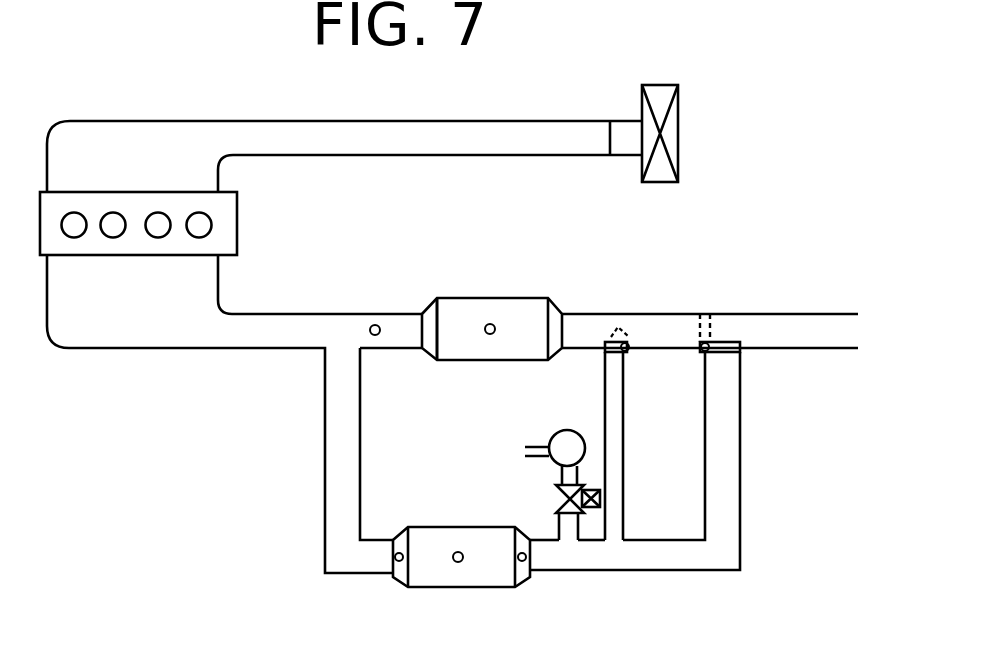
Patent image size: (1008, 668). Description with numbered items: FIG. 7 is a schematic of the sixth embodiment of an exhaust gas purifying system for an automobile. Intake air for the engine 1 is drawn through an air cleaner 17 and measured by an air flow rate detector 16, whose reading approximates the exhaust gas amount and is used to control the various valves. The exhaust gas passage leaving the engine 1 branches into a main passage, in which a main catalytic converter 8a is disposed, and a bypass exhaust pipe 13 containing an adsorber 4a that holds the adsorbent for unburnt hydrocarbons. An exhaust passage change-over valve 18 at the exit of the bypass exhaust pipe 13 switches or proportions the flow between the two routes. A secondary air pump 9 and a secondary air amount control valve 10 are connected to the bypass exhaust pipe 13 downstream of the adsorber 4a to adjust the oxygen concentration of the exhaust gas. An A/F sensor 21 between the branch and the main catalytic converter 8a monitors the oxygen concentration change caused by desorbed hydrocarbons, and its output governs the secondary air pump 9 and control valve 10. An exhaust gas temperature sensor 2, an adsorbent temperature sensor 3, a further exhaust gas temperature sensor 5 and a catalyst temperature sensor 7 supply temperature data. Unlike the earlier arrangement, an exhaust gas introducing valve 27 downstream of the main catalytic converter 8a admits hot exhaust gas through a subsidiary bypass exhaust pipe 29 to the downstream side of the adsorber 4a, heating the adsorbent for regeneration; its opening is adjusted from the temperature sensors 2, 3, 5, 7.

The engine 1 is at (220, 227).
The exhaust gas temperature sensor 2 is at (395, 577).
The adsorbent temperature sensor 3 is at (458, 562).
The adsorber 4a is at (493, 567).
The exhaust gas temperature sensor 5 is at (527, 580).
The catalyst temperature sensor 7 is at (490, 324).
The main catalytic converter 8a is at (455, 317).
The secondary air pump 9 is at (567, 430).
The secondary air amount control valve 10 is at (553, 500).
The bypass exhaust pipe 13 is at (325, 500).
The air flow rate detector 16 is at (623, 148).
The air cleaner 17 is at (672, 138).
The exhaust passage change-over valve 18 is at (708, 340).
The A/F sensor 21 is at (375, 325).
The exhaust gas introducing valve 27 is at (603, 343).
The subsidiary bypass exhaust pipe 29 is at (625, 450).